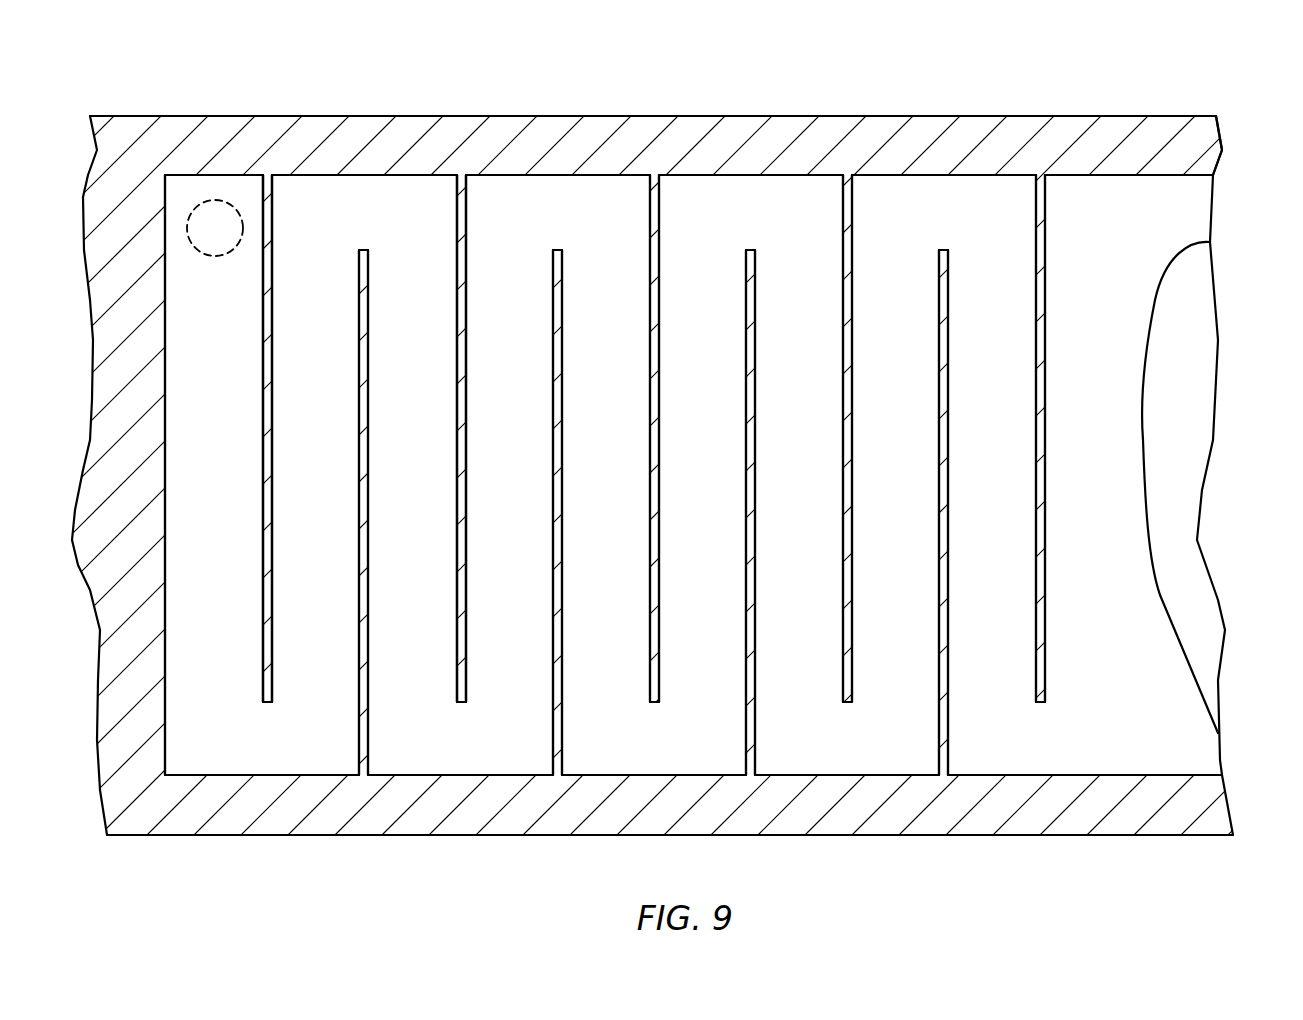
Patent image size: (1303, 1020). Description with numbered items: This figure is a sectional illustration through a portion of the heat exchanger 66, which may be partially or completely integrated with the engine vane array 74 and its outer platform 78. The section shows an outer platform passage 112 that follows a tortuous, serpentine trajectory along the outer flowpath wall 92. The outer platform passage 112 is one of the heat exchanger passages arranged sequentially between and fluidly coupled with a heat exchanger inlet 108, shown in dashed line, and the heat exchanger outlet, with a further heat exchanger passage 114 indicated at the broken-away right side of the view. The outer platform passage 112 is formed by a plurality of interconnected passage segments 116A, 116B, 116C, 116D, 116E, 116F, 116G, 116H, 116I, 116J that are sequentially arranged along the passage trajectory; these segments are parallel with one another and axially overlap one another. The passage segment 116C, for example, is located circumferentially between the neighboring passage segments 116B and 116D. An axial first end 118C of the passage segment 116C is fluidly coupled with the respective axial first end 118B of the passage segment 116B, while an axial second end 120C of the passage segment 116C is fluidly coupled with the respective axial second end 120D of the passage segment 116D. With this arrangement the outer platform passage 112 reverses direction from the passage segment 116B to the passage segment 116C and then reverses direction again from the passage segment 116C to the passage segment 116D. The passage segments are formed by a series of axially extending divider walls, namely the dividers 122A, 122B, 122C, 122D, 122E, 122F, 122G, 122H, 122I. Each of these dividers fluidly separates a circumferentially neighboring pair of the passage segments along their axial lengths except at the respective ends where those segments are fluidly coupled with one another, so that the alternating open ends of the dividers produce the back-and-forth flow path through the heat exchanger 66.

The heat exchanger 66 is at (953, 158).
The engine vane array 74 is at (1150, 90).
The outer platform 78 is at (532, 103).
The outer flowpath wall 92 is at (238, 748).
The heat exchanger inlet 108 is at (216, 200).
The outer platform passage 112 is at (338, 196).
The heat exchanger passage 114 is at (1194, 414).
The passage segment 116A is at (183, 537).
The passage segment 116B is at (285, 537).
The passage segment 116C is at (383, 537).
The passage segment 116D is at (482, 537).
The passage segment 116E is at (577, 537).
The passage segment 116F is at (675, 537).
The passage segment 116G is at (769, 537).
The passage segment 116H is at (867, 537).
The passage segment 116I is at (970, 537).
The passage segment 116J is at (1077, 537).
The axial first end 118B is at (300, 175).
The axial first end 118C is at (412, 175).
The axial second end 120C is at (407, 777).
The axial second end 120D is at (516, 777).
The divider 122A is at (272, 367).
The divider 122B is at (368, 367).
The divider 122C is at (466, 367).
The divider 122D is at (562, 367).
The divider 122E is at (659, 367).
The divider 122F is at (755, 367).
The divider 122G is at (852, 367).
The divider 122H is at (948, 367).
The divider 122I is at (1045, 367).